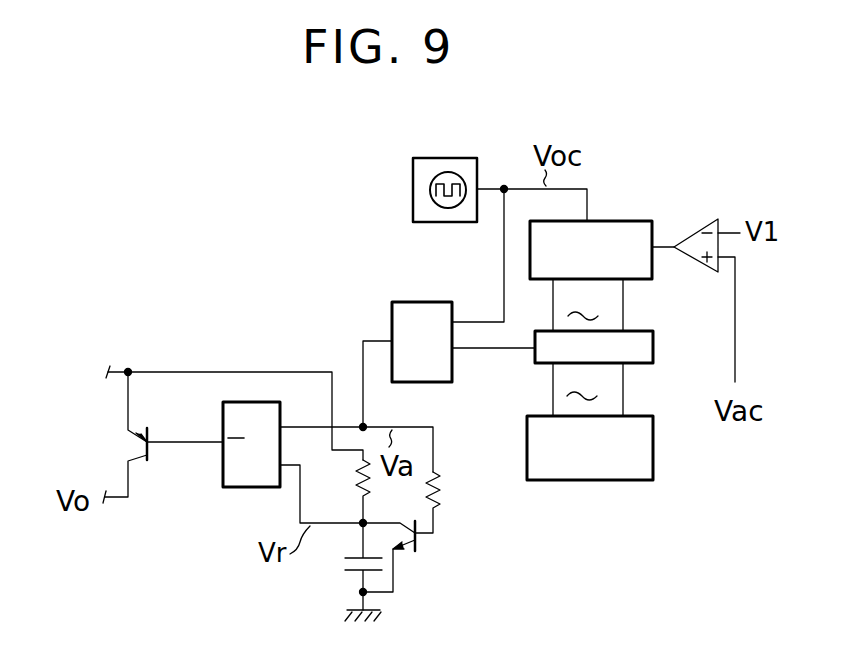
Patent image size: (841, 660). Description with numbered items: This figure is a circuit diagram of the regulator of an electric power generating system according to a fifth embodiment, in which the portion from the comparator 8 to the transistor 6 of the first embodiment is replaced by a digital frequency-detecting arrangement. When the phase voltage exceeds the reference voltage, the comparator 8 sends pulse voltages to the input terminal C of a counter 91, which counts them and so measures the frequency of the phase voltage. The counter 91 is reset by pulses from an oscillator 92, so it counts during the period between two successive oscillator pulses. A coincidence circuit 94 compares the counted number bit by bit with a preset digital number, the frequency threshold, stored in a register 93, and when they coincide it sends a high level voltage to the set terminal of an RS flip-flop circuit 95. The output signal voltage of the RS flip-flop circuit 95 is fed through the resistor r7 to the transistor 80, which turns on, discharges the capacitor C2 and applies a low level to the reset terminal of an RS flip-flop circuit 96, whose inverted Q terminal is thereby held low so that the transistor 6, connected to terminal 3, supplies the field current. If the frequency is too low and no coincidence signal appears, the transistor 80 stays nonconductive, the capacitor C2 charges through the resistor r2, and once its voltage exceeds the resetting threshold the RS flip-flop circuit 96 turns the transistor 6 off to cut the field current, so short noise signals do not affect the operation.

The input terminal 3 is at (220, 408).
The transistor 6 is at (139, 462).
The comparator 8 is at (688, 249).
The transistor 80 is at (409, 556).
The counter 91 is at (608, 231).
The oscillator 92 is at (446, 161).
The register 93 is at (653, 442).
The coincidence circuit 94 is at (691, 354).
The RS flip-flop circuit 95 is at (438, 382).
The RS flip-flop circuit 96 is at (241, 477).
The resistor r2 is at (354, 484).
The resistor r7 is at (442, 498).
The capacitor C2 is at (341, 566).